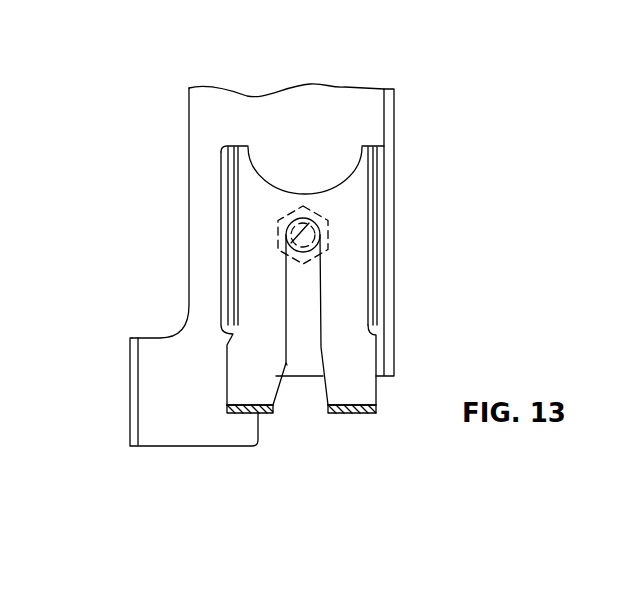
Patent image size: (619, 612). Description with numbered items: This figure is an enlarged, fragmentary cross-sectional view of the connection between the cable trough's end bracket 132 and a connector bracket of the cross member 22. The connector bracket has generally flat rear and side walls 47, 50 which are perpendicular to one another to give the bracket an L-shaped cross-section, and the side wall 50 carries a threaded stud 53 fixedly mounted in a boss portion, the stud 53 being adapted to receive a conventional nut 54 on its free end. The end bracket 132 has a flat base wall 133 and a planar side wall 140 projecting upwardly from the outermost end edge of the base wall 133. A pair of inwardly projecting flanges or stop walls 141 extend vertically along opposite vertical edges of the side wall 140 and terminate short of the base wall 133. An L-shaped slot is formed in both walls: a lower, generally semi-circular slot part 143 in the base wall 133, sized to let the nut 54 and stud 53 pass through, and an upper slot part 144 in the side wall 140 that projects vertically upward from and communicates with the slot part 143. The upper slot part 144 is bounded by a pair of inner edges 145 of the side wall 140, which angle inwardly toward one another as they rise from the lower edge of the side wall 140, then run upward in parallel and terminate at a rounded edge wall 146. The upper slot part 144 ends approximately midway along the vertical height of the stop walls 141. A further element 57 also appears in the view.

The cross member 22 is at (160, 160).
The rear wall 47 is at (390, 123).
The side wall 50 is at (323, 95).
The threaded stud 53 is at (290, 243).
The nut 54 is at (330, 210).
The mounting flange 57 is at (128, 411).
The end bracket 132 is at (245, 132).
The base wall 133 is at (360, 413).
The side wall 140 is at (352, 271).
The stop walls 141 is at (378, 208).
The lower slot part 143 is at (326, 391).
The upper slot part 144 is at (310, 347).
The inner edges 145 is at (325, 372).
The rounded edge wall 146 is at (284, 240).